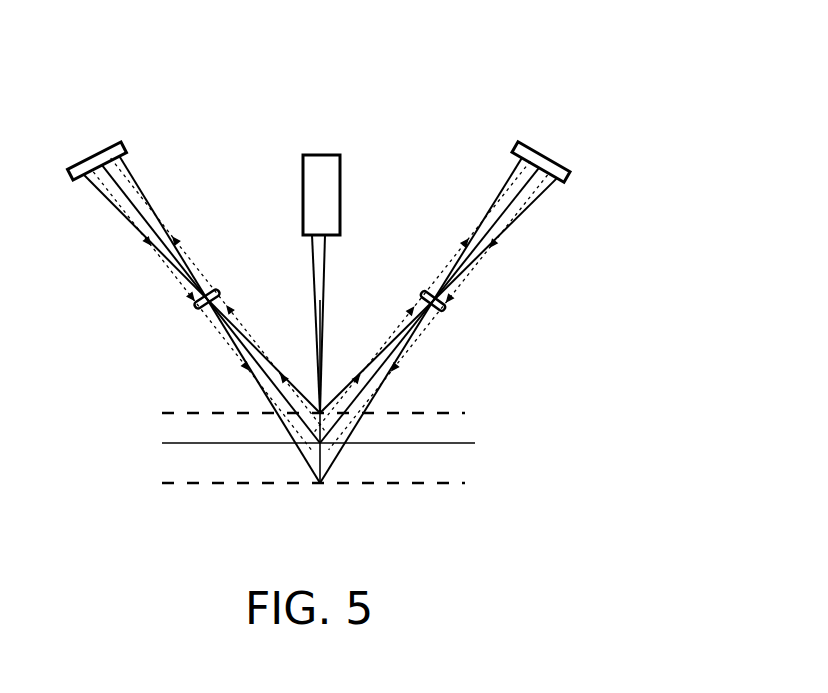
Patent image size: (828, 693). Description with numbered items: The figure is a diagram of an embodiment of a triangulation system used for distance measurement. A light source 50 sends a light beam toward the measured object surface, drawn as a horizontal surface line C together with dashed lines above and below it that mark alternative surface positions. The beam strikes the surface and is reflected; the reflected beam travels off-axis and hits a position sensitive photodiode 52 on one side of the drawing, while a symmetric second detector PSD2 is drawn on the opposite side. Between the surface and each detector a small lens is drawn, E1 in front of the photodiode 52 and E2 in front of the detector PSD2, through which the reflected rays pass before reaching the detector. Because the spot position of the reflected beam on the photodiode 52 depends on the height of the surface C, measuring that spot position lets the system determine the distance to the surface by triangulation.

The light source 50 is at (325, 155).
The position sensitive photodiode 52 is at (572, 173).
The position sensitive detector PSD2 is at (120, 151).
The lens E1 is at (451, 305).
The lens E2 is at (188, 307).
The surface positions C, C', C'' C is at (335, 449).